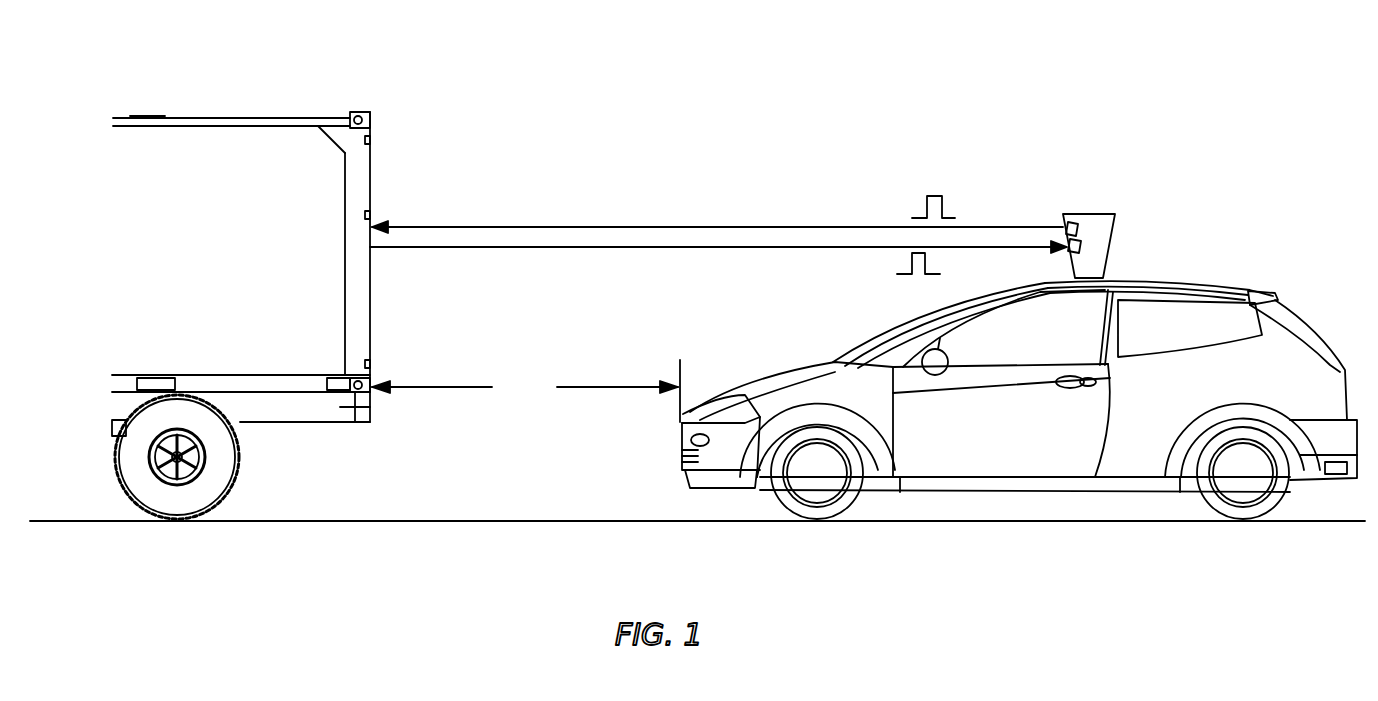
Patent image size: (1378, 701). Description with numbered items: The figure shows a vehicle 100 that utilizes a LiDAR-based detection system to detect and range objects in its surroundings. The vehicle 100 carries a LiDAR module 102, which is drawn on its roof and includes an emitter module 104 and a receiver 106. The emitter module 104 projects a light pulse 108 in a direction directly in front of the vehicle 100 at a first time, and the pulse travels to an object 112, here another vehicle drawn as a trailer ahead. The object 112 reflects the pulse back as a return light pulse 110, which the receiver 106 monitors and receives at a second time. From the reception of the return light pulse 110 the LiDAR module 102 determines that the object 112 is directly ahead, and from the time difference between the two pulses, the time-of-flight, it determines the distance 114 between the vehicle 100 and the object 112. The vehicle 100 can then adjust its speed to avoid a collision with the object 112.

The vehicle 100 is at (1215, 283).
The LiDAR module 102 is at (1113, 214).
The emitter module 104 is at (1070, 222).
The receiver 106 is at (1082, 245).
The light pulse 108 is at (940, 192).
The return light pulse 110 is at (897, 271).
The object 112 is at (318, 118).
The distance 114 is at (526, 391).